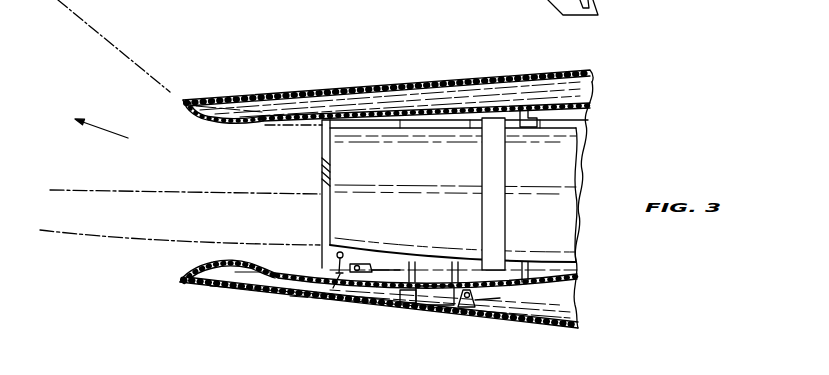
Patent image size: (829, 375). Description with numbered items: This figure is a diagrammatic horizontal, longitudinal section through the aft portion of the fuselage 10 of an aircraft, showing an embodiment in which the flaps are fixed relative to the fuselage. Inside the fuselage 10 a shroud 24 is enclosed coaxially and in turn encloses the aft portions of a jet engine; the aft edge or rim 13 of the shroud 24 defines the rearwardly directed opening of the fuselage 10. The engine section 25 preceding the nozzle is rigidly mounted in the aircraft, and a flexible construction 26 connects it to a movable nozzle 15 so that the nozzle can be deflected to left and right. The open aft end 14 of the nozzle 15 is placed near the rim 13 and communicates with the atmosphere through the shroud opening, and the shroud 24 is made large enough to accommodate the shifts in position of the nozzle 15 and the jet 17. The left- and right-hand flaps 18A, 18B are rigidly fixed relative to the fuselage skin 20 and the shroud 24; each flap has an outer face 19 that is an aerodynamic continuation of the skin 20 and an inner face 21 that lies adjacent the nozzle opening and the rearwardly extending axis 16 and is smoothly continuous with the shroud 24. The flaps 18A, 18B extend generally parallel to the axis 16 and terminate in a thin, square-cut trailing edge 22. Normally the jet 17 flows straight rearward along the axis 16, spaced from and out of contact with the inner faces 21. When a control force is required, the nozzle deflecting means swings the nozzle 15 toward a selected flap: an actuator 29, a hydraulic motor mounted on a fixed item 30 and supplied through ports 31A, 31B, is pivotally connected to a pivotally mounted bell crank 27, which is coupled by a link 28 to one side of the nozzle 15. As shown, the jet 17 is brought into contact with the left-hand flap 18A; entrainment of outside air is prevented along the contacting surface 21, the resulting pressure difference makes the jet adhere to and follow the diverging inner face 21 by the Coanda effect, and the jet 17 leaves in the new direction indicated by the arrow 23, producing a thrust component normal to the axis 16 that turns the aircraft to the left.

The fuselage 10 is at (388, 79).
The aft edge or rim of the shroud 13 is at (320, 160).
The open aft end of the nozzle 14 is at (328, 213).
The movable nozzle 15 is at (416, 173).
The rearwardly extending axis 16 is at (118, 191).
The jet 17 is at (115, 45).
The left-hand flap 18A is at (241, 87).
The right-hand flap 18B is at (195, 299).
The outer face of the flap 19 is at (267, 92).
The fuselage skin 20 is at (497, 72).
The inner face of the flap 21 is at (205, 117).
The flap trailing edge 22 is at (177, 97).
The arrow indicating new jet direction 23 is at (118, 134).
The shroud 24 is at (572, 102).
The engine section 25 is at (575, 237).
The flexible construction 26 is at (505, 215).
The bell crank 27 is at (347, 275).
The link 28 is at (307, 270).
The actuator 29 is at (425, 302).
The fixed item 30 is at (478, 297).
The port 31A is at (415, 270).
The port 31B is at (455, 270).